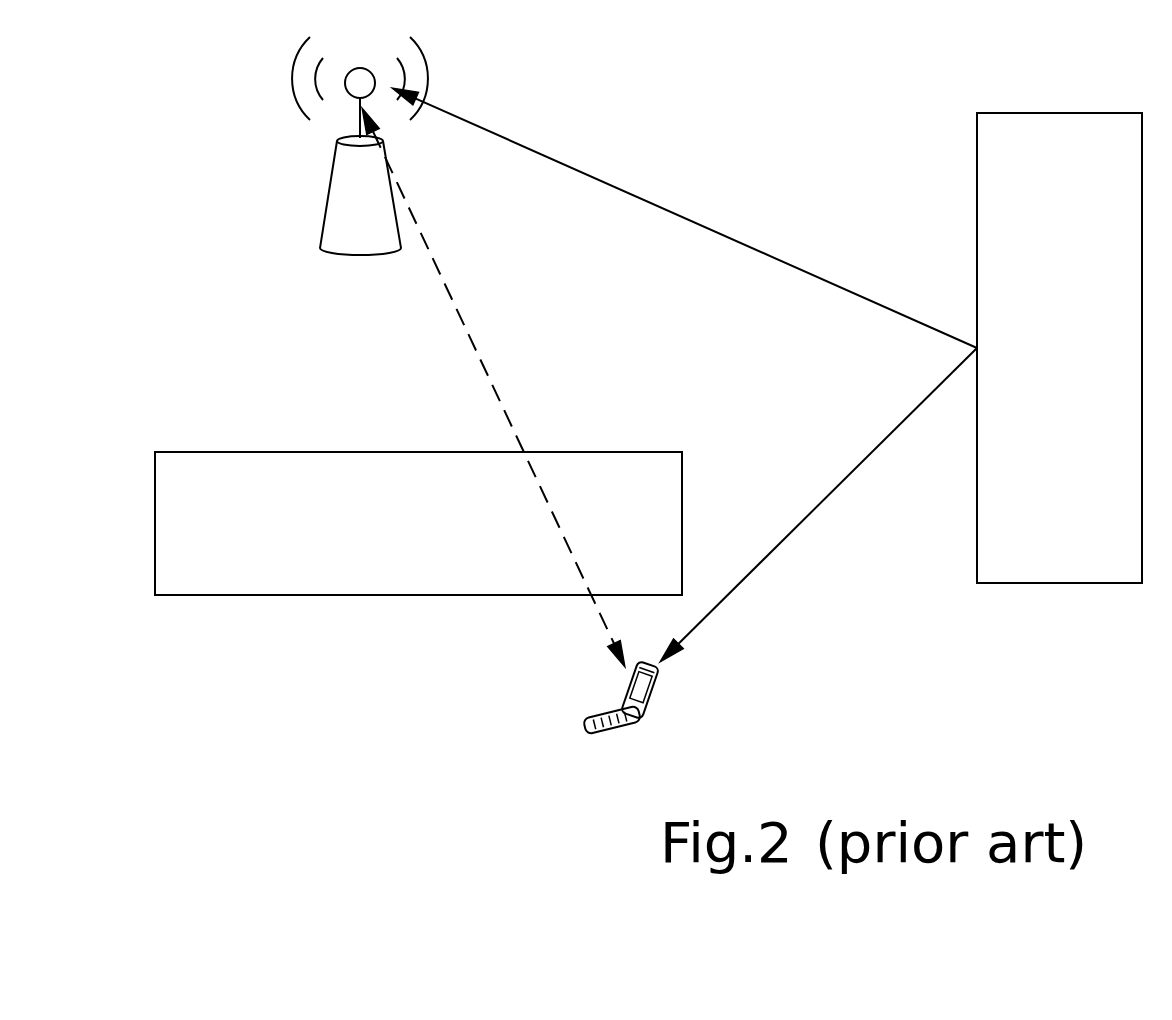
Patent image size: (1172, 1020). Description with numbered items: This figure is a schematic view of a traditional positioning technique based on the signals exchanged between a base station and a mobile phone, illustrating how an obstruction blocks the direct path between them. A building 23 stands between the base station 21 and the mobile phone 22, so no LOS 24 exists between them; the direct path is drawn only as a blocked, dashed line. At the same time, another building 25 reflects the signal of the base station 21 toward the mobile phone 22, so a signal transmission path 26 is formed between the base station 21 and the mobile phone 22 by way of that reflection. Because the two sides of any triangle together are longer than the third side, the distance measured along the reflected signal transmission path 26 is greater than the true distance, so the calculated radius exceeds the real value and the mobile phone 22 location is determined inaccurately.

The base station 21 is at (350, 203).
The mobile phone 22 is at (628, 727).
The building 23 is at (293, 452).
The LOS (line of sight) 24 is at (465, 323).
The another building 25 is at (1048, 583).
The signal transmission path 26 is at (670, 212).